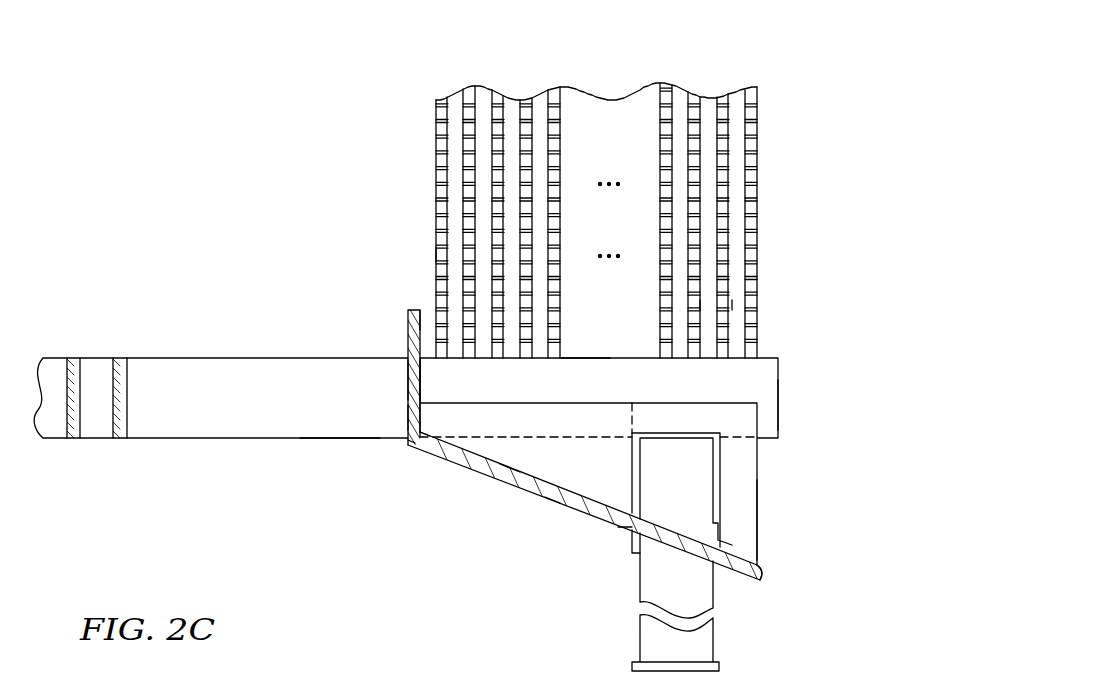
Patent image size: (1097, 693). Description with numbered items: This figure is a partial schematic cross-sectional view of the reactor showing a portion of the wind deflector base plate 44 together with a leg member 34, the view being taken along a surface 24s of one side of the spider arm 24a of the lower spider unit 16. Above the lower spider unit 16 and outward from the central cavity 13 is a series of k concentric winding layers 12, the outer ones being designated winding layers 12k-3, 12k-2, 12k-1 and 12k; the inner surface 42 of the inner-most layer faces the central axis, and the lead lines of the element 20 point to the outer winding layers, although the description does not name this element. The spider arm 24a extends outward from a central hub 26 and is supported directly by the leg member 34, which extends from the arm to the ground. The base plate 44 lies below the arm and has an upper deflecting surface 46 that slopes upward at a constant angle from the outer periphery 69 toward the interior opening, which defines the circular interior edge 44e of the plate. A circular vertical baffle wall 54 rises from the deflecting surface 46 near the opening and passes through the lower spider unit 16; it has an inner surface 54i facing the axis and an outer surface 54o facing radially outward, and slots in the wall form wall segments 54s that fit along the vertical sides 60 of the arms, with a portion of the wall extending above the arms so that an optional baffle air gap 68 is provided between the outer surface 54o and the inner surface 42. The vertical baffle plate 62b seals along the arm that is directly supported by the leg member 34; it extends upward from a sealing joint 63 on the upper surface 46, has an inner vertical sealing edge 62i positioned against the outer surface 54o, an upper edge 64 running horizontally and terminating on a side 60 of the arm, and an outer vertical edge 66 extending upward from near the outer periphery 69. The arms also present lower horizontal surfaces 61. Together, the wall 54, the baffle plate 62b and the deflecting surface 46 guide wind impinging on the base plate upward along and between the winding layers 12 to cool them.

The winding layers 12 is at (683, 70).
The winding layer 12k-3 is at (666, 132).
The winding layer 12k-2 is at (694, 163).
The winding layer 12k-1 is at (722, 198).
The outermost winding layer 12k is at (750, 232).
The central cavity 13 is at (253, 274).
The lower spider unit 16 is at (272, 345).
The fin slots 20 is at (735, 305).
The spider arm 24a is at (778, 404).
The arm surface 24s is at (585, 378).
The central hub 26 is at (95, 370).
The leg member 34 is at (640, 643).
The inner surface 42 is at (436, 256).
The base plate 44 is at (522, 490).
The interior edge 44e is at (408, 440).
The upper deflecting surface 46 is at (556, 491).
The vertical baffle wall 54 is at (408, 323).
The inner surface 54i is at (408, 378).
The outer surface 54o is at (420, 378).
The wall segment 54s is at (408, 418).
The vertical side 60 is at (228, 418).
The lower horizontal surface 61 is at (335, 440).
The vertical baffle plate 62b is at (738, 490).
The inner vertical sealing edge 62i is at (440, 434).
The sealing joint 63 is at (512, 473).
The upper edge 64 is at (713, 403).
The outer vertical edge 66 is at (757, 522).
The baffle air gap 68 is at (428, 316).
The outer periphery 69 is at (760, 577).